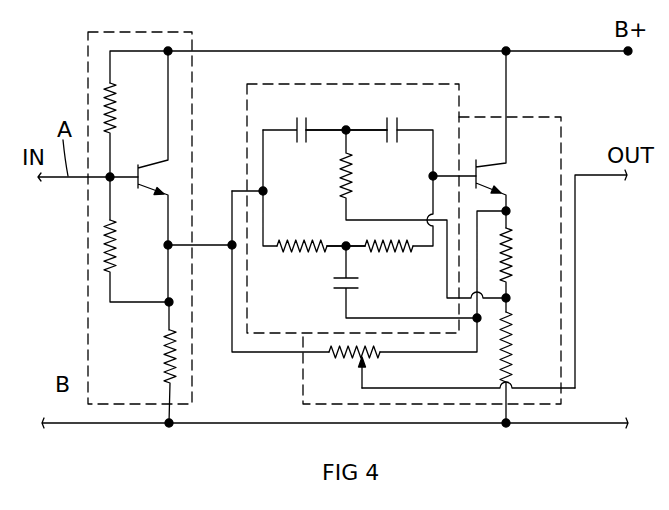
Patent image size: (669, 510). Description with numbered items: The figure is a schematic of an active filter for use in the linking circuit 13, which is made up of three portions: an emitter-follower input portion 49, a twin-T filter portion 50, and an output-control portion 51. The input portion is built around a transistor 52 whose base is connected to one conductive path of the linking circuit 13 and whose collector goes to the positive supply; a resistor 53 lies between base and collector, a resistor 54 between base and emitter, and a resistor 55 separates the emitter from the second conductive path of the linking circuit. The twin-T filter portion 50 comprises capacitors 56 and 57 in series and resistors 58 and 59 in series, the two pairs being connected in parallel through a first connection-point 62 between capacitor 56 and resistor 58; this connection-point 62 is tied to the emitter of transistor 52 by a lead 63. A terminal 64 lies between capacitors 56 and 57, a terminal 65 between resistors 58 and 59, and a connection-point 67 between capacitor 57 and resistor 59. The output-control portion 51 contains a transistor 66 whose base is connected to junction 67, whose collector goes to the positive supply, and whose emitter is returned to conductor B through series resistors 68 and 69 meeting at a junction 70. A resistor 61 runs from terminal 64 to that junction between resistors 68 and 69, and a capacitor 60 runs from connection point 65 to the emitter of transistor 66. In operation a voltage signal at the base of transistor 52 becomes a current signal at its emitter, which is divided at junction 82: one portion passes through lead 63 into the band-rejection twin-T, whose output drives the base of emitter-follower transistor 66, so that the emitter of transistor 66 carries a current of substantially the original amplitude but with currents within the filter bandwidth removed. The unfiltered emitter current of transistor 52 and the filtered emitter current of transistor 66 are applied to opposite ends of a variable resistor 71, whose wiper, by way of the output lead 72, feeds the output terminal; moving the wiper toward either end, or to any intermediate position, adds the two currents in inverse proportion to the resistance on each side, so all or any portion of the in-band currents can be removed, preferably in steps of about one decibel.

The linking circuit 13 is at (60, 178).
The emitter-follower input portion 49 is at (85, 64).
The twin-T filter portion 50 is at (318, 84).
The output-control portion 51 is at (565, 148).
The transistor 52 is at (138, 165).
The resistor 53 is at (115, 103).
The resistor 54 is at (116, 250).
The resistor 55 is at (163, 357).
The capacitor 56 is at (297, 124).
The capacitor 57 is at (397, 125).
The resistor 58 is at (310, 253).
The resistor 59 is at (388, 253).
The capacitor 60 is at (343, 289).
The resistor 61 is at (350, 188).
The first connection-point 62 is at (265, 191).
The lead 63 is at (231, 207).
The terminal 64 is at (346, 127).
The terminal 65 is at (346, 243).
The transistor 66 is at (478, 165).
The connection-point 67 is at (431, 178).
The resistor 68 is at (513, 250).
The resistor 69 is at (515, 343).
The junction 70 is at (510, 297).
The variable resistor 71 is at (341, 358).
The feedback conductor 72 is at (407, 387).
The junction 82 is at (228, 248).